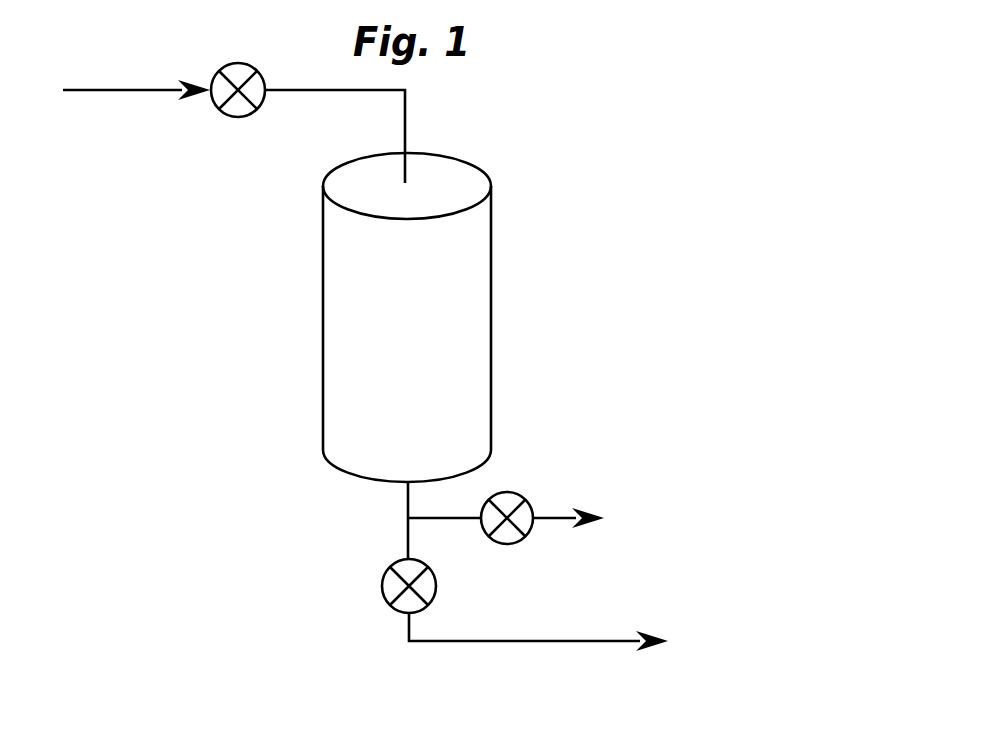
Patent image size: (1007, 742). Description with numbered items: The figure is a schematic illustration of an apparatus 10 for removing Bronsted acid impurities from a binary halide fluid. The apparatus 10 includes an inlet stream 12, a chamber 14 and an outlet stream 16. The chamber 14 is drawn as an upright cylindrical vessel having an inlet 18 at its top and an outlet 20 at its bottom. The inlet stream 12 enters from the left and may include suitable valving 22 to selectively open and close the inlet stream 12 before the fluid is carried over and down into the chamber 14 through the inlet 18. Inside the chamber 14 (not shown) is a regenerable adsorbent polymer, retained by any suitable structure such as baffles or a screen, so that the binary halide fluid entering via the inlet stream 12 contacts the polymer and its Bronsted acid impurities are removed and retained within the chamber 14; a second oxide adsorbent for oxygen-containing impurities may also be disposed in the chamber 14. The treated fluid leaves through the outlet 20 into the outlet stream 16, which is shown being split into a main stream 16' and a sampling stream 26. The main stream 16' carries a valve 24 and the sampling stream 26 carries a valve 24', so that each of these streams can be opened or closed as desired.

The apparatus 10 is at (526, 280).
The inlet stream 12 is at (95, 92).
The chamber 14 is at (493, 348).
The outlet stream 16 is at (350, 540).
The main stream 16' is at (538, 660).
The inlet 18 is at (410, 184).
The outlet 20 is at (405, 484).
The valving 22 is at (238, 112).
The valve 24 is at (358, 597).
The valve 24' is at (540, 535).
The sampling stream 26 is at (462, 518).